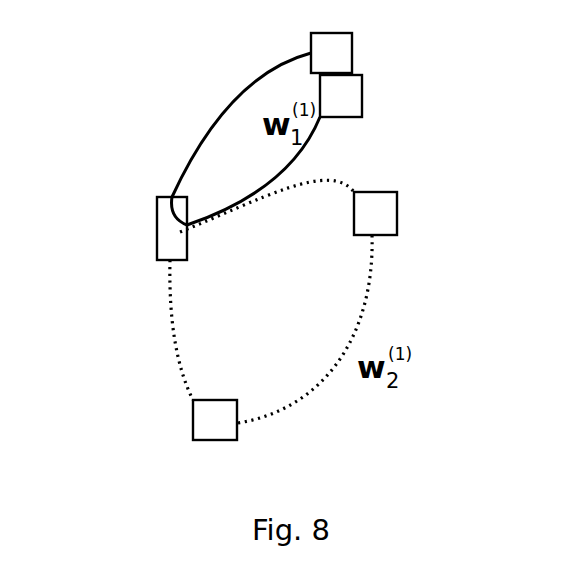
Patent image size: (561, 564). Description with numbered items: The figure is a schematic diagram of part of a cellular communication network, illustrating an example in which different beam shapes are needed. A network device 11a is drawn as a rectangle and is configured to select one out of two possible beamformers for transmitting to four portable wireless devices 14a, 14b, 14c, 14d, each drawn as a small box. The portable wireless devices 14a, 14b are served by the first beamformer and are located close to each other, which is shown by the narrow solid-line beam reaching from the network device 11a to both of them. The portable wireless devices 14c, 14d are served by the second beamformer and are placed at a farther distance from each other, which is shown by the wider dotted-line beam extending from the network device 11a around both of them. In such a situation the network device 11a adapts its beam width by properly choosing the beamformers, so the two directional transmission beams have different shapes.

The network device 11a is at (157, 235).
The portable wireless device 14a is at (352, 47).
The portable wireless device 14b is at (362, 97).
The portable wireless device 14c is at (397, 212).
The portable wireless device 14d is at (210, 440).